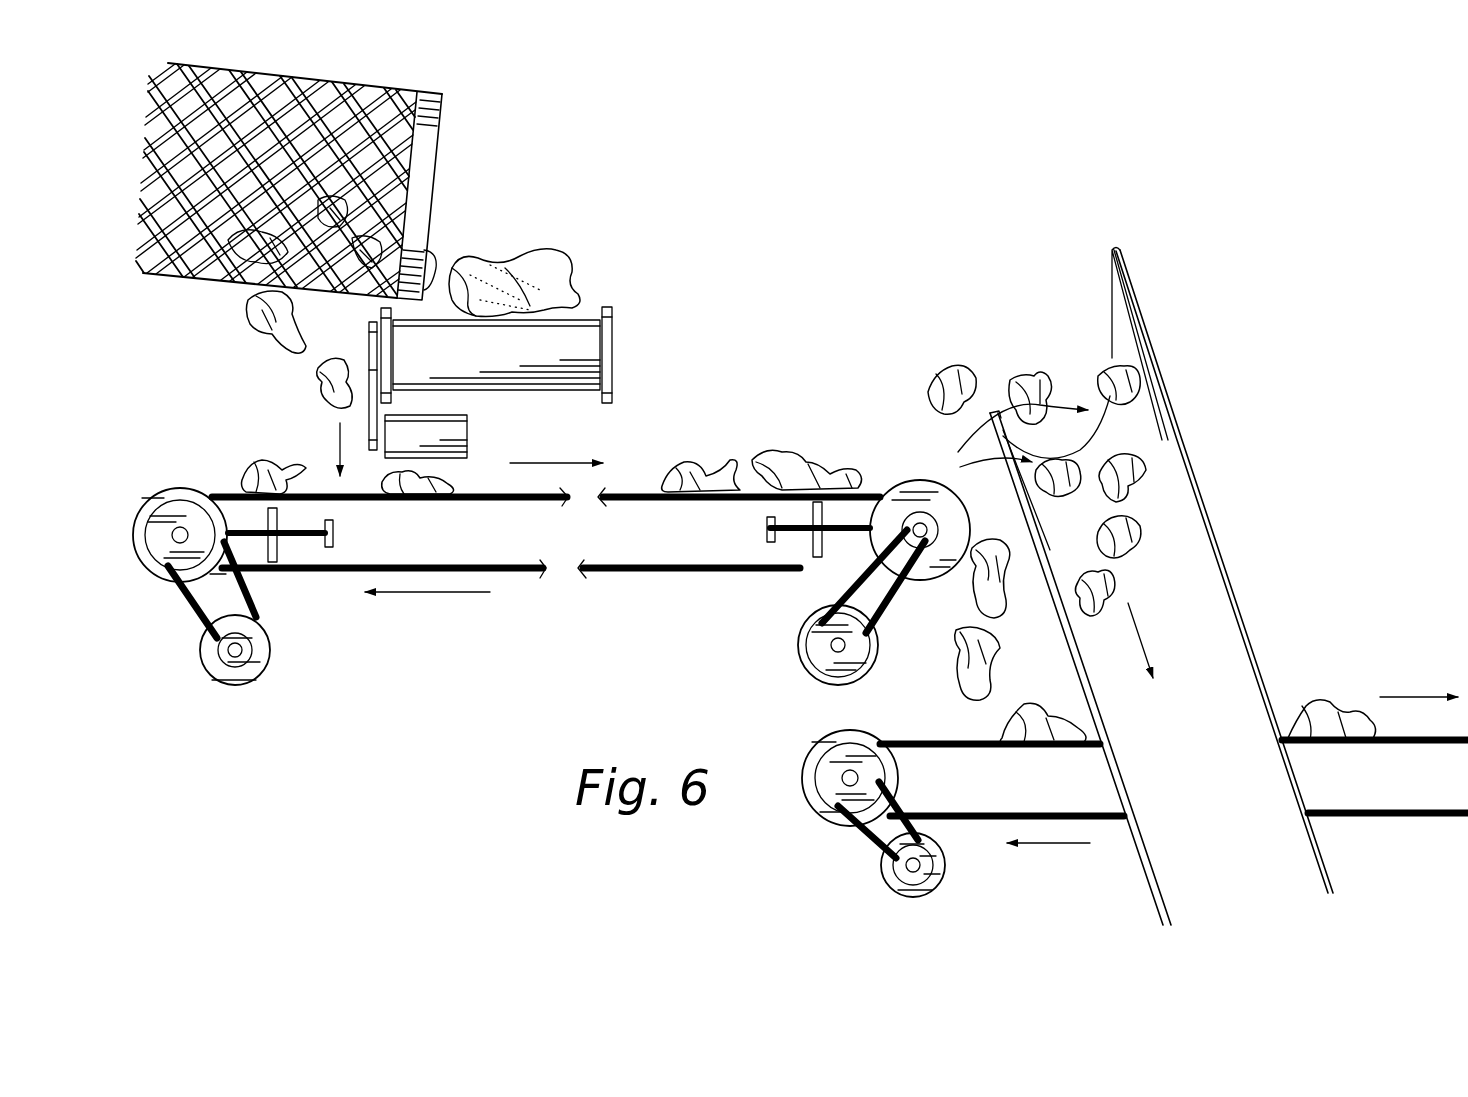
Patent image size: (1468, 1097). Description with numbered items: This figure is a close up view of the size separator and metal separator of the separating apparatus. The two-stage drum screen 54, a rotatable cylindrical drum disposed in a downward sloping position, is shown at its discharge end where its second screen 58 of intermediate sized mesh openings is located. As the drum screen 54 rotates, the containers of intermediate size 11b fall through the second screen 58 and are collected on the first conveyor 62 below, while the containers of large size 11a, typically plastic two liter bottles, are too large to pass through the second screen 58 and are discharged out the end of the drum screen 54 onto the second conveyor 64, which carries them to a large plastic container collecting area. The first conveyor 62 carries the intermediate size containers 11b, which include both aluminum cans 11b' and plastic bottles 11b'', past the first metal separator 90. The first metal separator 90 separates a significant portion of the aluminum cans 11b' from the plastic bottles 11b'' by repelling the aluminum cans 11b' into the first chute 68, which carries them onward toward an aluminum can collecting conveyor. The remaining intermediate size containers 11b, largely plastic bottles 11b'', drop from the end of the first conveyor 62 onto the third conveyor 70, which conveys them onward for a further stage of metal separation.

The two-stage drum screen 54 is at (400, 66).
The second screen 58 is at (312, 47).
The containers of large size 11a is at (512, 252).
The containers of intermediate size 11b is at (528, 392).
The aluminum cans 11b' is at (1074, 370).
The plastic bottles 11b'' is at (938, 666).
The second conveyor 64 is at (618, 316).
The first conveyor 62 is at (506, 578).
The first metal separator 90 is at (897, 460).
The first chute 68 is at (1177, 507).
The third conveyor 70 is at (1406, 732).